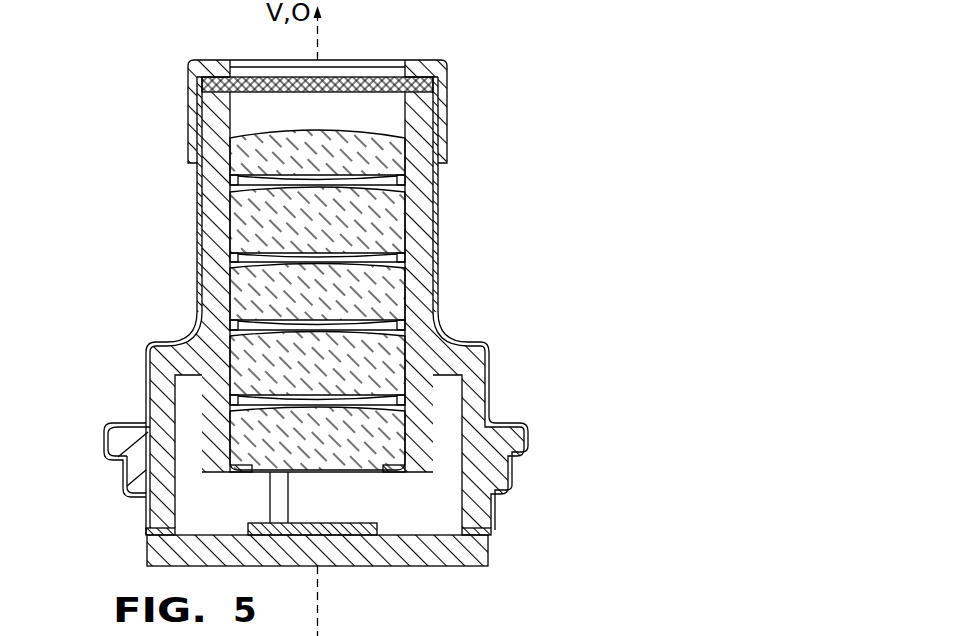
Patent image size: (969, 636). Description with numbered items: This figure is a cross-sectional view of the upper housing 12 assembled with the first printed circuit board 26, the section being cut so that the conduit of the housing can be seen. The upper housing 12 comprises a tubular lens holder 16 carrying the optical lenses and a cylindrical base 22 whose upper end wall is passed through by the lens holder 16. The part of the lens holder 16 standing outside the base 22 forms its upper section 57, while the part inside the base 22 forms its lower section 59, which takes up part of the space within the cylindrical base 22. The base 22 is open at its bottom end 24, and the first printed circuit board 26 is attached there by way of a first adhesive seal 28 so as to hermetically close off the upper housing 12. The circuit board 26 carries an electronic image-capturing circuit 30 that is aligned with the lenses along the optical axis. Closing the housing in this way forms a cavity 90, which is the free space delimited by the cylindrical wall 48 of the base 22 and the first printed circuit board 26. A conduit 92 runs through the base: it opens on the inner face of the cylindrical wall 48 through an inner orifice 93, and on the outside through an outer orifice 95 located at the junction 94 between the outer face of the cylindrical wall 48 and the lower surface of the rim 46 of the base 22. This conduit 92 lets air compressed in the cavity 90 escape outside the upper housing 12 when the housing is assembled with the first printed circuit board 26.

The upper housing 12 is at (508, 193).
The tubular lens holder 16 is at (188, 218).
The upper section 57 is at (423, 278).
The inner orifice 93 is at (148, 343).
The cylindrical wall 48 is at (146, 375).
The rim 46 is at (535, 432).
The cylindrical base 22 is at (525, 408).
The conduit 92 is at (146, 421).
The outer orifice 95 is at (106, 436).
The junction 94 is at (140, 462).
The lower section 59 is at (427, 413).
The cavity 90 is at (413, 493).
The electronic image-capturing circuit 30 is at (303, 525).
The first adhesive seal 28 is at (473, 532).
The bottom end 24 is at (135, 557).
The first printed circuit board 26 is at (443, 555).